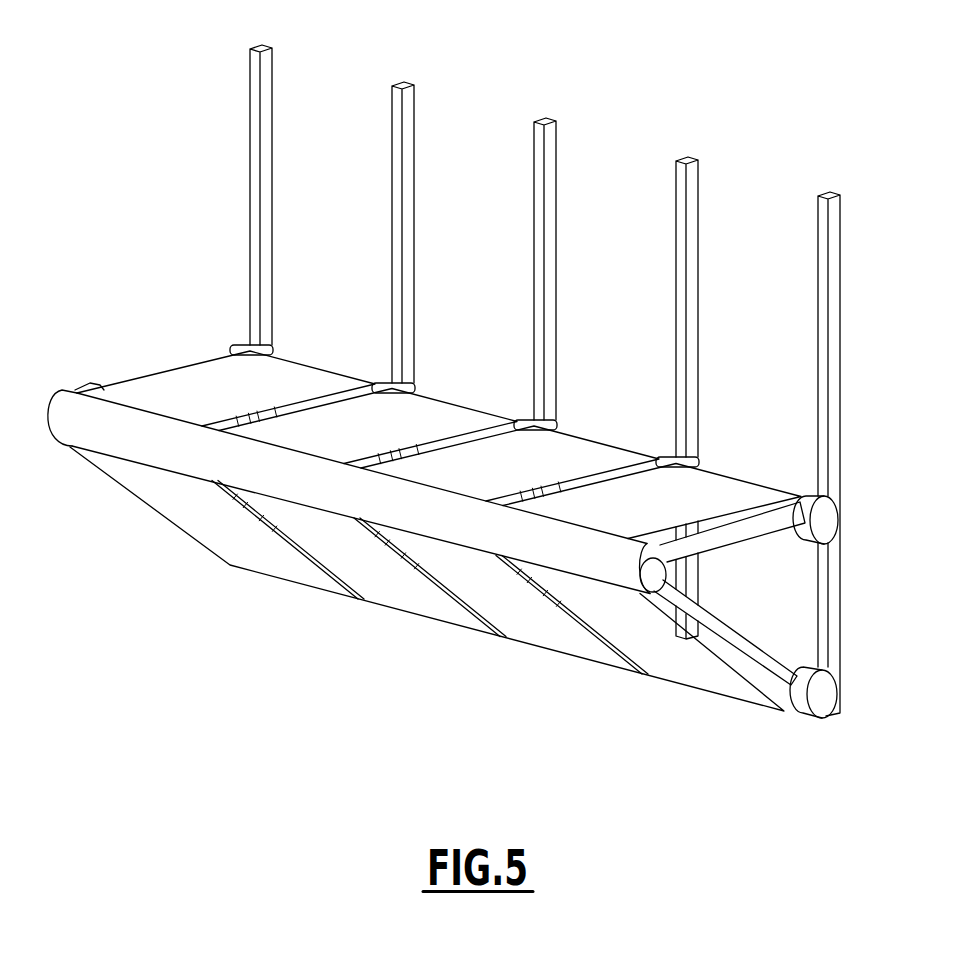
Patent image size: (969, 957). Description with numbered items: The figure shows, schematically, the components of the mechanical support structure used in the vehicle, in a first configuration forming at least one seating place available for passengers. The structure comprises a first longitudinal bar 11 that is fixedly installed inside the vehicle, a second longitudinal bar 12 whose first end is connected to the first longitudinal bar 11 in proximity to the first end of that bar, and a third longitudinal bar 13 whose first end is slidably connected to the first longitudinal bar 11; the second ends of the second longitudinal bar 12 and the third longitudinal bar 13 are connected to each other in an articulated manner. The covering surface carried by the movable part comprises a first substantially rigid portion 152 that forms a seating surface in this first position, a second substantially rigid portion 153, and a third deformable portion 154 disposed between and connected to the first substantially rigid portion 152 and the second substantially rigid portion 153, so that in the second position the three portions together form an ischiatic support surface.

The first longitudinal bar 11 is at (835, 427).
The second longitudinal bar 12 is at (753, 648).
The third longitudinal bar 13 is at (748, 540).
The first substantially rigid portion 152 is at (207, 388).
The second substantially rigid portion 153 is at (192, 510).
The third deformable portion 154 is at (73, 413).